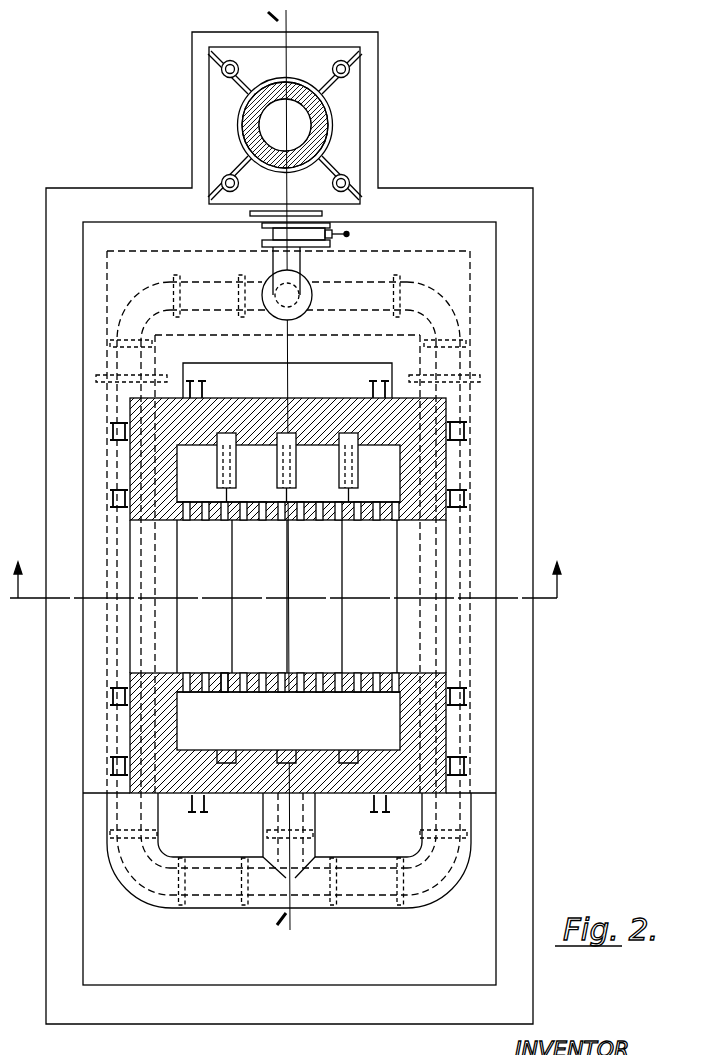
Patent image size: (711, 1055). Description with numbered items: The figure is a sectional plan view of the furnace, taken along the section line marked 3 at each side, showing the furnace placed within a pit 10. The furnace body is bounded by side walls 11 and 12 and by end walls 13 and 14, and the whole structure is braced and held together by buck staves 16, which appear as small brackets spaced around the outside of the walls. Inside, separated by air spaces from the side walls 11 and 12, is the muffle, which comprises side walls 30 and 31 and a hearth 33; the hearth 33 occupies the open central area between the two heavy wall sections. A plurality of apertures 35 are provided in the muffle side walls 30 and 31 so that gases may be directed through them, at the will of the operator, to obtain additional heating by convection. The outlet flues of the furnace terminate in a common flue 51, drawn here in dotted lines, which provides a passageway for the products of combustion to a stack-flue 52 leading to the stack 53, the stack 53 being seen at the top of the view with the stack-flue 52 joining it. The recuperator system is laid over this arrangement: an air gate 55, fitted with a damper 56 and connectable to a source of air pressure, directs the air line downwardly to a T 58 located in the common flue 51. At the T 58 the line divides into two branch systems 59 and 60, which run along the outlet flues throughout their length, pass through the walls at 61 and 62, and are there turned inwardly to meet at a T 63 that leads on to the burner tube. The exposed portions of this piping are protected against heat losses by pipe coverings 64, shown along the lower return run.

The pit 10 is at (289, 528).
The side wall 11 is at (355, 797).
The side wall 12 is at (288, 462).
The end wall 13 is at (288, 723).
The end wall 14 is at (409, 467).
The buck staves 16 is at (208, 392).
The side wall 30 is at (327, 670).
The side wall 31 is at (223, 520).
The hearth 33 is at (288, 596).
The apertures 35 is at (263, 670).
The common flue 51 is at (288, 522).
The stack-flue 52 is at (277, 185).
The stack 53 is at (285, 125).
The air gate 55 is at (330, 243).
The damper 56 is at (349, 232).
The T 58 is at (300, 306).
The branch system 59 is at (182, 585).
The branch system 60 is at (393, 585).
The wall passage 61 is at (126, 793).
The wall passage 62 is at (450, 795).
The T 63 is at (318, 870).
The pipe coverings 64 is at (382, 908).
The section line 3- 3 is at (285, 581).